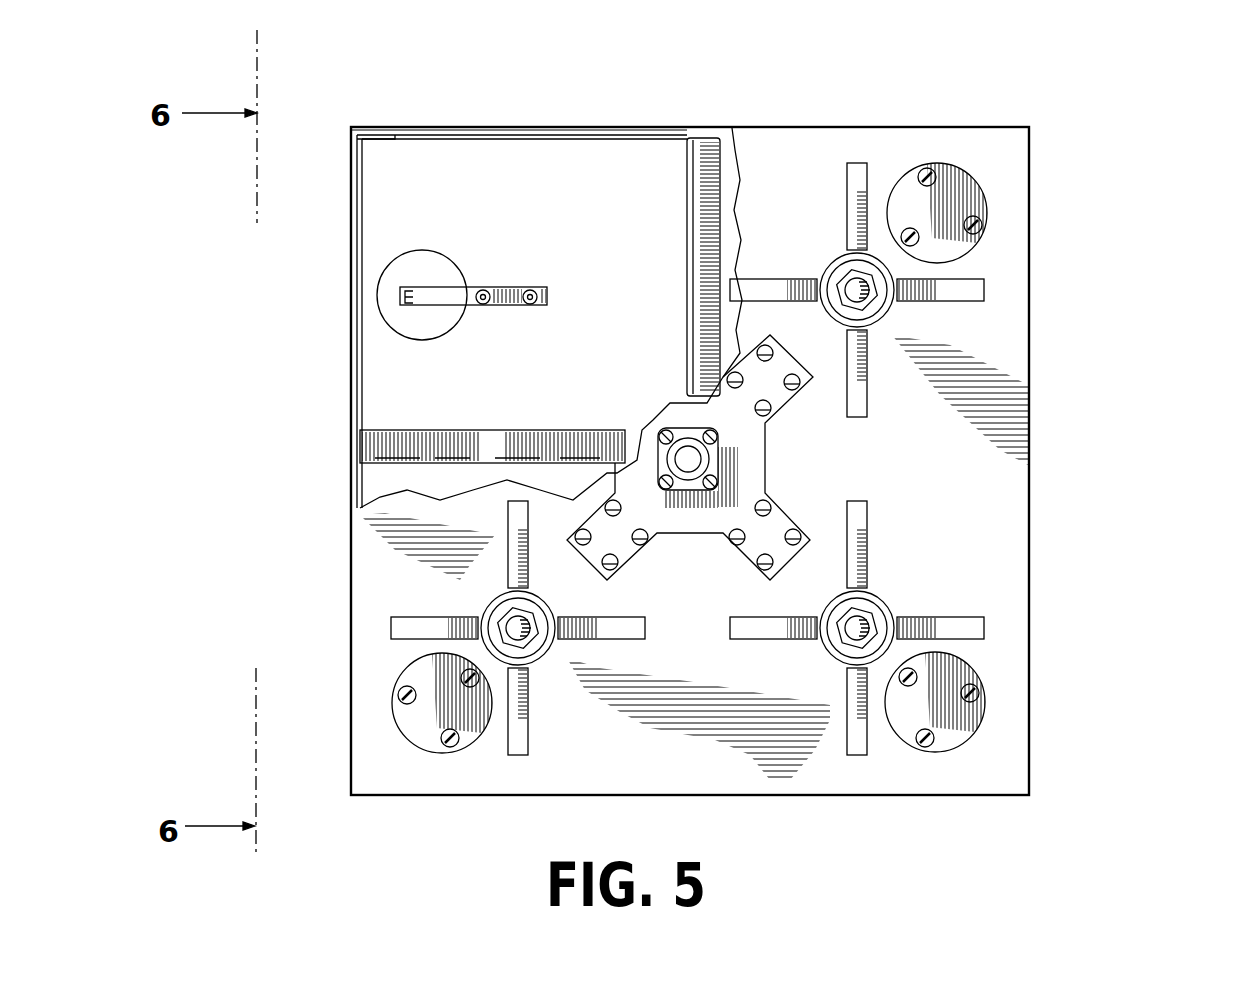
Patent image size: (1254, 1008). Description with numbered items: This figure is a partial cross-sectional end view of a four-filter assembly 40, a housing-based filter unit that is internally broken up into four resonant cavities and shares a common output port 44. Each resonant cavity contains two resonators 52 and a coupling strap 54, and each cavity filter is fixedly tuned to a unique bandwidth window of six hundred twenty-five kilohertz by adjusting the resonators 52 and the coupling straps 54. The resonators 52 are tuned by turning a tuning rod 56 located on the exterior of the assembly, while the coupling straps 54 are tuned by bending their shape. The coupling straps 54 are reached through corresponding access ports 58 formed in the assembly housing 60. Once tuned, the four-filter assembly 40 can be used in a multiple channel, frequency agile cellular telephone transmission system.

The four-filter assembly 40 is at (1092, 164).
The common output port 44 is at (693, 458).
The resonators 52 is at (912, 319).
The coupling strap 54 is at (400, 296).
The tuning rod 56 is at (850, 287).
The access ports 58 is at (352, 302).
The assembly housing 60 is at (352, 162).